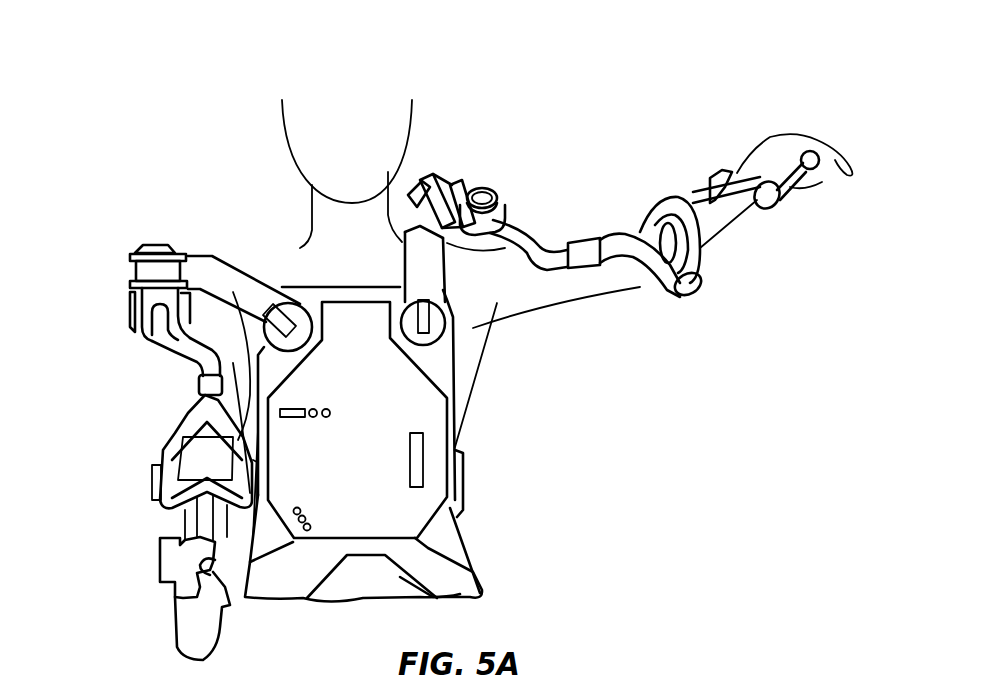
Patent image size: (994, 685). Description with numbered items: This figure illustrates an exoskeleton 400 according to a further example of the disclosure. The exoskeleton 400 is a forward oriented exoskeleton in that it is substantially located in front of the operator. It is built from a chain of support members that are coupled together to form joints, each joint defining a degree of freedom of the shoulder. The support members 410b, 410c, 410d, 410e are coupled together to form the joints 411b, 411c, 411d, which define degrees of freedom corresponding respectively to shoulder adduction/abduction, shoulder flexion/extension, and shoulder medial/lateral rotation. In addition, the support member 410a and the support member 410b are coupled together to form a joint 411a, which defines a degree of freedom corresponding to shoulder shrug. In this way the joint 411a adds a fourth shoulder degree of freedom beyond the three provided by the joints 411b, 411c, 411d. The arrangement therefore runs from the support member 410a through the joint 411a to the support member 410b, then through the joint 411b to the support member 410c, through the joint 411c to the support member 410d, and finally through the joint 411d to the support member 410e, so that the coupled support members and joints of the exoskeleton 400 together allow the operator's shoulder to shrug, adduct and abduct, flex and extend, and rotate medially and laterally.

The exoskeleton 400 is at (538, 93).
The support member 410a is at (313, 292).
The joint 411a is at (290, 294).
The support member 410b is at (230, 280).
The joint 411b is at (124, 243).
The support member 410c is at (133, 289).
The joint 411c is at (133, 339).
The support member 410d is at (182, 343).
The joint 411d is at (197, 374).
The support member 410e is at (168, 424).